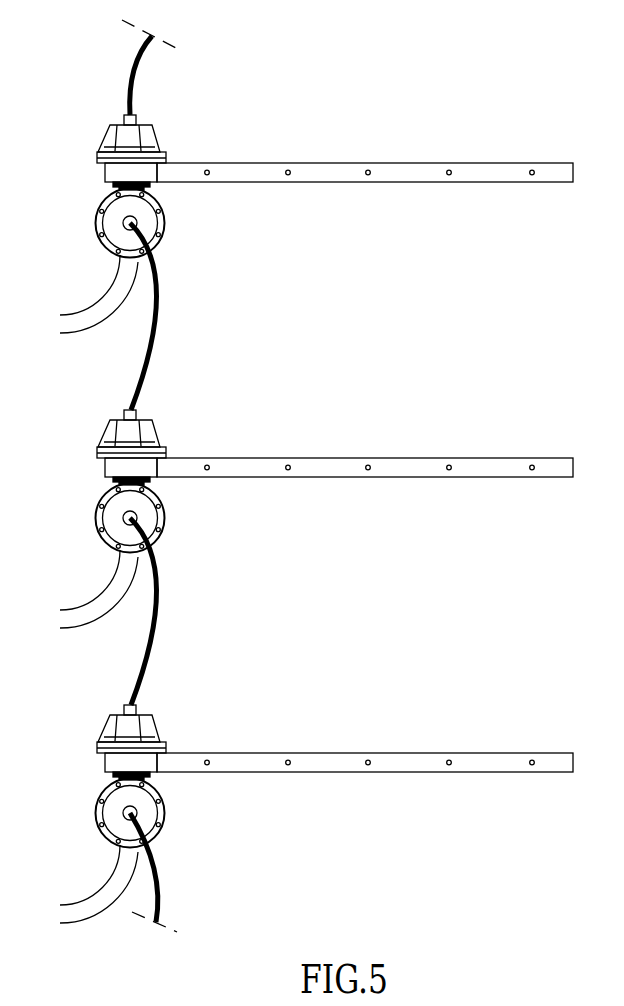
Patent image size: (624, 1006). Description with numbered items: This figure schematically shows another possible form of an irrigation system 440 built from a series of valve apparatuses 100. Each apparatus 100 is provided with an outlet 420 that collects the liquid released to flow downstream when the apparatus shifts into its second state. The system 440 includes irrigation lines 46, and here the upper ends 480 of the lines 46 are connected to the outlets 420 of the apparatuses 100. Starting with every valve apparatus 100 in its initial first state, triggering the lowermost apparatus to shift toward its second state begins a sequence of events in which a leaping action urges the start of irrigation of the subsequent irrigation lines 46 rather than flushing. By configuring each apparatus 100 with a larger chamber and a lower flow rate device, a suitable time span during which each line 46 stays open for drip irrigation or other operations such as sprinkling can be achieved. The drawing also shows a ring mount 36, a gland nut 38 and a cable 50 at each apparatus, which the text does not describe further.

The rotatable ring mount 36 is at (126, 222).
The cable gland nut 38 is at (125, 116).
The irrigation lines 46 is at (365, 435).
The cable 50 is at (163, 308).
The apparatus 100 is at (182, 423).
The outlet 420 is at (160, 184).
The irrigation system 440 is at (297, 470).
The upper ends 480 is at (190, 176).